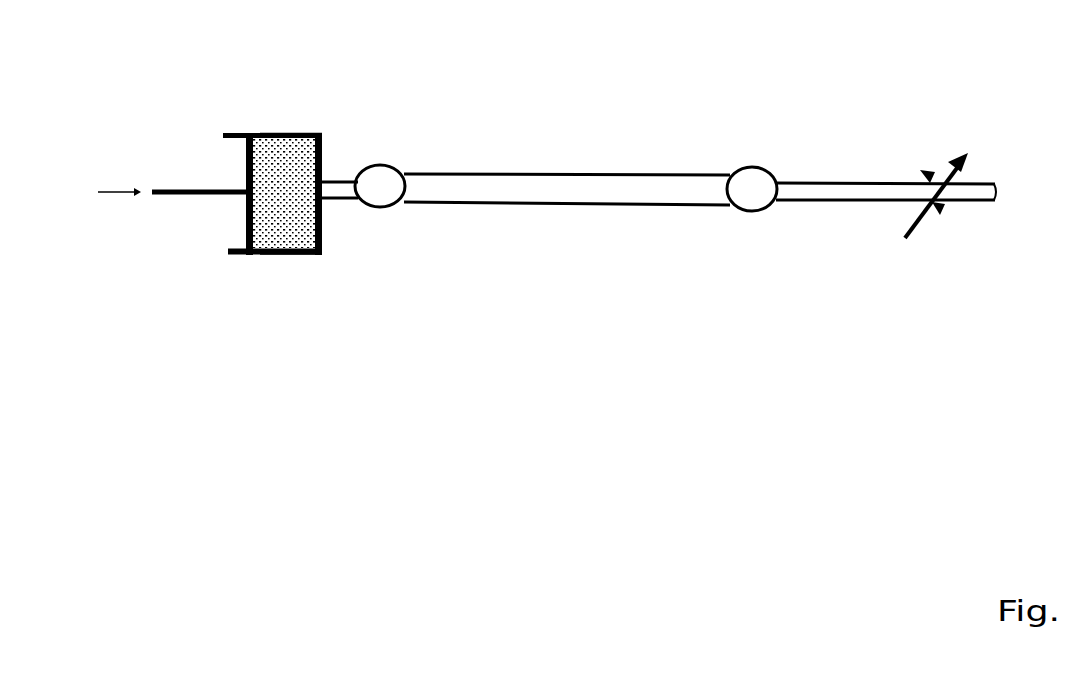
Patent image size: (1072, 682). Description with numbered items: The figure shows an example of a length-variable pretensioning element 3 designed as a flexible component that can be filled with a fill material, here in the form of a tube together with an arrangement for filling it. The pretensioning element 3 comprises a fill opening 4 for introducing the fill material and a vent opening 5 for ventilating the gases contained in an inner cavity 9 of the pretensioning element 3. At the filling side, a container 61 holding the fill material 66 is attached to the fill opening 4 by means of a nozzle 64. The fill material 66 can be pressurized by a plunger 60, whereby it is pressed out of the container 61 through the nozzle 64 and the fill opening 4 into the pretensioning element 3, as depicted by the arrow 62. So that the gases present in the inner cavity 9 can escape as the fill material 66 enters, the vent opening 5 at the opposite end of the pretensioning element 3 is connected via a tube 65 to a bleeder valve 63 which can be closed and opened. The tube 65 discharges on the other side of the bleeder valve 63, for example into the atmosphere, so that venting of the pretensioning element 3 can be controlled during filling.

The pretensioning element 3 is at (550, 174).
The fill opening 4 is at (380, 166).
The vent opening 5 is at (740, 167).
The inner cavity 9 is at (506, 190).
The plunger 60 is at (246, 173).
The container 61 is at (282, 135).
The arrow 62 is at (100, 191).
The bleeder valve 63 is at (926, 170).
The nozzle 64 is at (335, 199).
The tube 65 is at (842, 201).
The fill material 66 is at (280, 223).